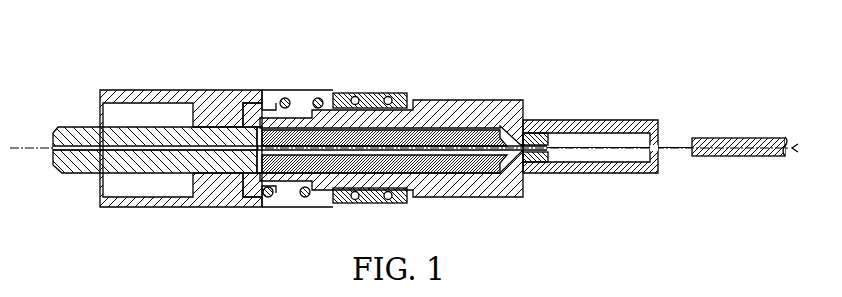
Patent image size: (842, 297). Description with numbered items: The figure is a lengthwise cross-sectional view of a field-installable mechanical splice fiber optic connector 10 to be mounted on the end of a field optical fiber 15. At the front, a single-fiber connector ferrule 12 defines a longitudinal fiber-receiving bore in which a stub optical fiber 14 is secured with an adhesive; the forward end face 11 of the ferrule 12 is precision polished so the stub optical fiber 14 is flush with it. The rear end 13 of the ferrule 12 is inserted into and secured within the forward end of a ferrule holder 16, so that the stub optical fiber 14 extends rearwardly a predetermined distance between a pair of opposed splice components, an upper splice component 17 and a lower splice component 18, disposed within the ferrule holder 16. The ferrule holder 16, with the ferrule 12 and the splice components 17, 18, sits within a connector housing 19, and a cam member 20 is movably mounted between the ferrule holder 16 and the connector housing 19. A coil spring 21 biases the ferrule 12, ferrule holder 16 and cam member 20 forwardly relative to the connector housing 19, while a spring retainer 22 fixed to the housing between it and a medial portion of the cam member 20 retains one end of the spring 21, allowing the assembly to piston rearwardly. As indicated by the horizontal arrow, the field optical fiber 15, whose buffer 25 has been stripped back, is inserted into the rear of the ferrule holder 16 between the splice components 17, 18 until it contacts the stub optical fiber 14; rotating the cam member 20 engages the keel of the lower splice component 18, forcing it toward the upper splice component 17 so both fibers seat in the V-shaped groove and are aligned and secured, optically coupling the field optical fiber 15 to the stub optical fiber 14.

The mechanical splice fiber optic connector 10 is at (373, 55).
The end face 11 is at (53, 160).
The connector ferrule 12 is at (70, 126).
The rear end 13 is at (247, 128).
The stub optical fiber 14 is at (82, 153).
The field optical fiber 15 is at (617, 150).
The ferrule holder 16 is at (580, 121).
The upper splice component 17 is at (455, 132).
The lower splice component 18 is at (435, 176).
The connector housing 19 is at (167, 208).
The cam member 20 is at (504, 100).
The coil spring 21 is at (297, 98).
The spring retainer 22 is at (403, 94).
The buffer 25 is at (743, 138).